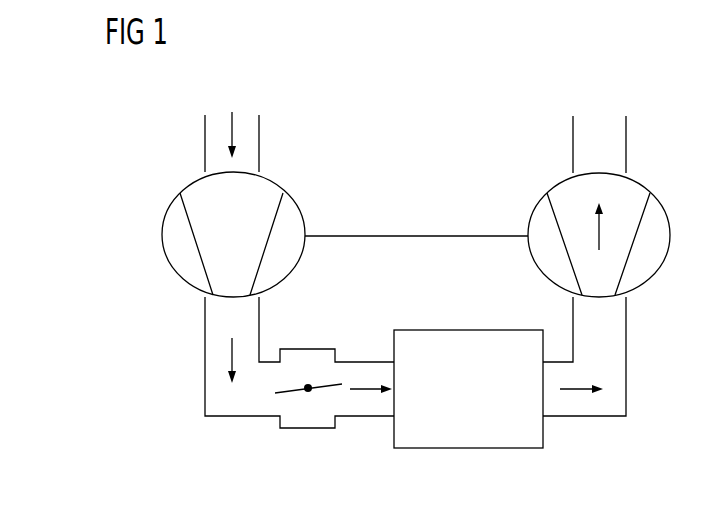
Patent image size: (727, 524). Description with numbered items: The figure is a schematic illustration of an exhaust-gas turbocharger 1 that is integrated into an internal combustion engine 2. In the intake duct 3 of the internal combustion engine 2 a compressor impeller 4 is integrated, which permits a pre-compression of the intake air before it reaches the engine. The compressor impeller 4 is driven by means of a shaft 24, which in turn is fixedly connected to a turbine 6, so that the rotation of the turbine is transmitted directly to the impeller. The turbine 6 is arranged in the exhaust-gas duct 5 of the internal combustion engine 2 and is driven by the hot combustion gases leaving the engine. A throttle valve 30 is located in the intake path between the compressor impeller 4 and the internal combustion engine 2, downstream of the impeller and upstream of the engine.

The exhaust-gas turbocharger 1 is at (667, 84).
The internal combustion engine 2 is at (466, 340).
The intake duct 3 is at (216, 358).
The compressor impeller 4 is at (176, 232).
The exhaust-gas duct 5 is at (618, 351).
The turbine 6 is at (655, 240).
The shaft 24 is at (417, 235).
The throttle valve 30 is at (308, 392).